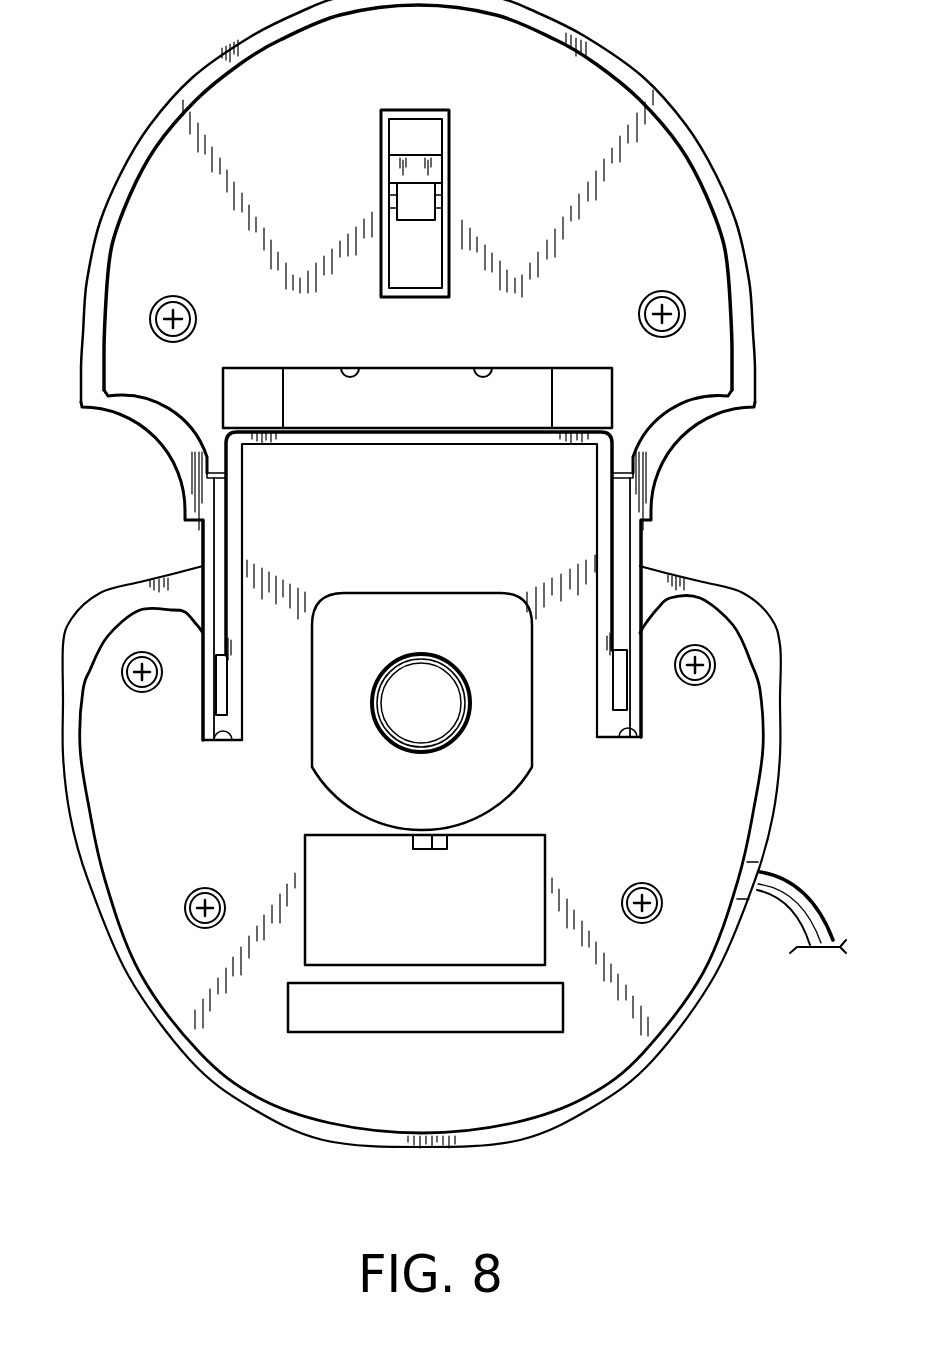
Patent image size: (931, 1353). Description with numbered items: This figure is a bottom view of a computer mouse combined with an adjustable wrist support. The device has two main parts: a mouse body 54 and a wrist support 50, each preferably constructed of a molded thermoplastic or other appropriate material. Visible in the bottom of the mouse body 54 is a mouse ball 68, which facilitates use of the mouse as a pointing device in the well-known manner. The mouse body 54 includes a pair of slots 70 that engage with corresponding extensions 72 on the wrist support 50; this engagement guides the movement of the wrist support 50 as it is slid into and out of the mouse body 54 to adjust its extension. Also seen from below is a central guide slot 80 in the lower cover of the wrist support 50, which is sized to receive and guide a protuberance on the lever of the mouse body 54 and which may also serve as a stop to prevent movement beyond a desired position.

The adjustable wrist support 50 is at (746, 160).
The mouse body 54 is at (788, 829).
The mouse ball 68 is at (440, 724).
The slots 70 is at (223, 692).
The extensions 72 is at (207, 543).
The central guide slot 80 is at (427, 263).